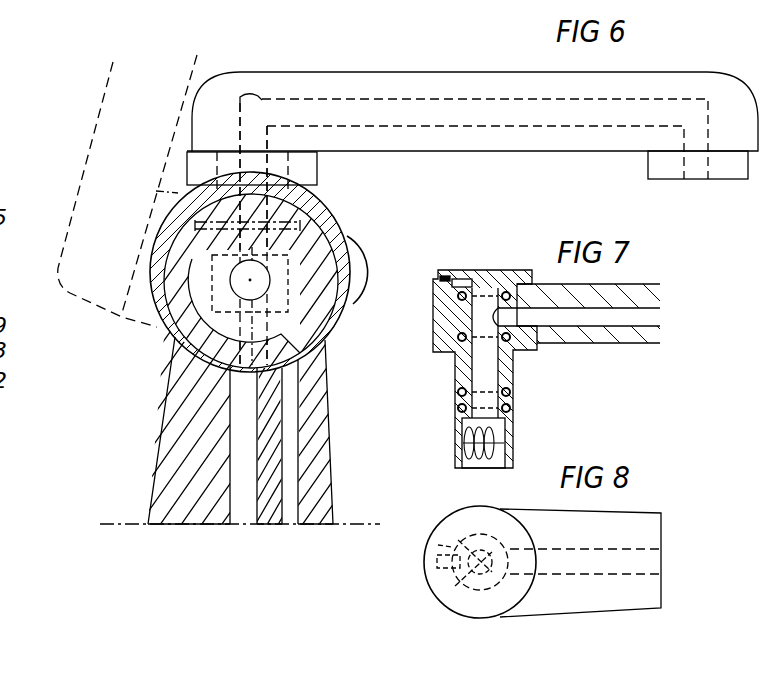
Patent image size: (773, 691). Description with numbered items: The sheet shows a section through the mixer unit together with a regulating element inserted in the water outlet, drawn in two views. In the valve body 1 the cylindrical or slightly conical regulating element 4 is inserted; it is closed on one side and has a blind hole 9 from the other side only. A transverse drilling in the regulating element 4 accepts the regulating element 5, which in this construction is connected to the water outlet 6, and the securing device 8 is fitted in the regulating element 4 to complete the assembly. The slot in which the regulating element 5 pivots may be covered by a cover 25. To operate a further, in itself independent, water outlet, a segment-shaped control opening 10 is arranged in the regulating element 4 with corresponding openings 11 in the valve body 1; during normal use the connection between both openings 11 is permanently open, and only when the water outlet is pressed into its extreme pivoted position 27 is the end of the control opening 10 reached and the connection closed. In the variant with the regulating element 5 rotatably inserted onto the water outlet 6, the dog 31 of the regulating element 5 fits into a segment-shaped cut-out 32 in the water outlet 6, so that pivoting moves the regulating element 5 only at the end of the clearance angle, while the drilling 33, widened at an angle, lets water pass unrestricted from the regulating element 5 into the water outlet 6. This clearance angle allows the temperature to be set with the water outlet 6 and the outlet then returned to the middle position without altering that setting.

In FIG. 6, the valve body 1 is at (318, 372).
In FIG. 6, the regulating element 4 is at (162, 328).
In FIG. 7, the regulating element 5 is at (515, 365).
In FIG. 8, the regulating element 5 is at (472, 583).
In FIG. 6, the water outlet 6 is at (500, 148).
In FIG. 7, the water outlet 6 is at (578, 333).
In FIG. 8, the water outlet 6 is at (568, 597).
In FIG. 6, the securing device 8 is at (165, 258).
In FIG. 6, the blind hole 9 is at (338, 331).
In FIG. 6, the control opening 10 is at (175, 378).
In FIG. 6, the openings 11 is at (247, 522).
In FIG. 6, the cover 25 is at (330, 215).
In FIG. 6, the extreme pivoted position 27 is at (103, 150).
In FIG. 7, the dog 31 is at (462, 282).
In FIG. 8, the dog 31 is at (448, 565).
In FIG. 7, the segment-shaped cut-out 32 is at (442, 276).
In FIG. 8, the segment-shaped cut-out 32 is at (442, 550).
In FIG. 8, the drilling 33 is at (497, 575).